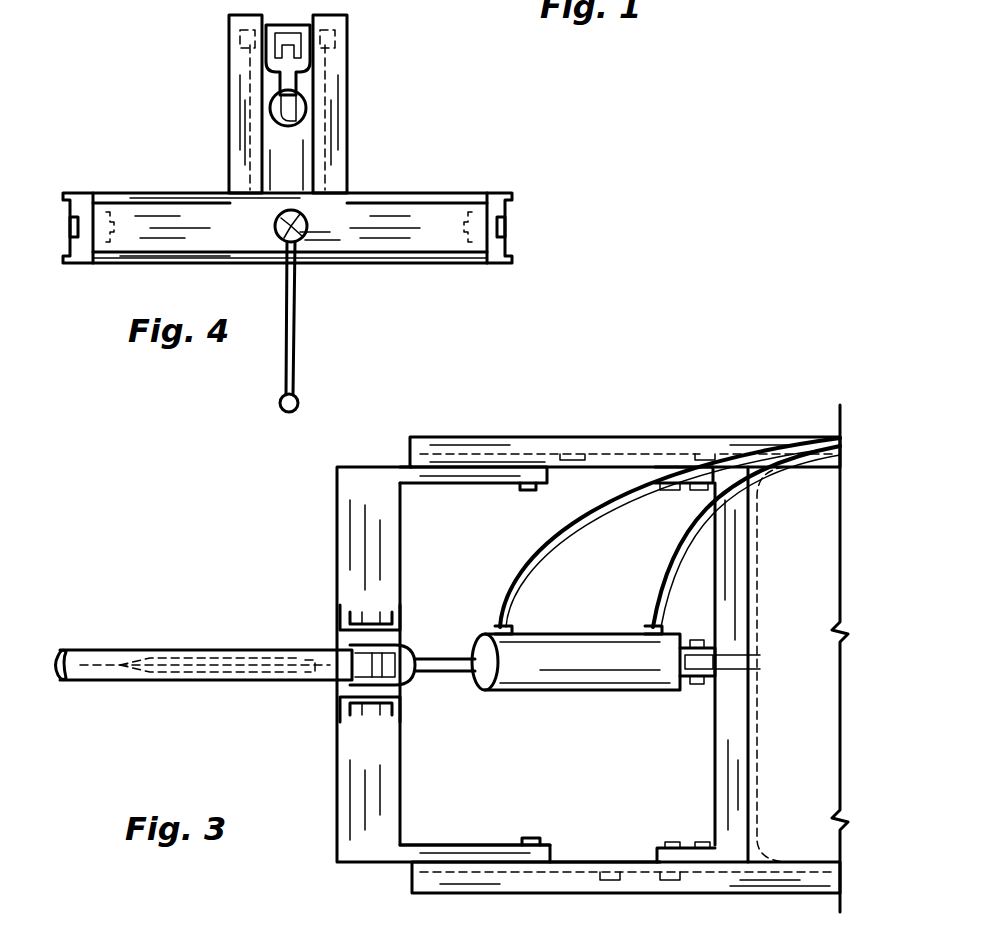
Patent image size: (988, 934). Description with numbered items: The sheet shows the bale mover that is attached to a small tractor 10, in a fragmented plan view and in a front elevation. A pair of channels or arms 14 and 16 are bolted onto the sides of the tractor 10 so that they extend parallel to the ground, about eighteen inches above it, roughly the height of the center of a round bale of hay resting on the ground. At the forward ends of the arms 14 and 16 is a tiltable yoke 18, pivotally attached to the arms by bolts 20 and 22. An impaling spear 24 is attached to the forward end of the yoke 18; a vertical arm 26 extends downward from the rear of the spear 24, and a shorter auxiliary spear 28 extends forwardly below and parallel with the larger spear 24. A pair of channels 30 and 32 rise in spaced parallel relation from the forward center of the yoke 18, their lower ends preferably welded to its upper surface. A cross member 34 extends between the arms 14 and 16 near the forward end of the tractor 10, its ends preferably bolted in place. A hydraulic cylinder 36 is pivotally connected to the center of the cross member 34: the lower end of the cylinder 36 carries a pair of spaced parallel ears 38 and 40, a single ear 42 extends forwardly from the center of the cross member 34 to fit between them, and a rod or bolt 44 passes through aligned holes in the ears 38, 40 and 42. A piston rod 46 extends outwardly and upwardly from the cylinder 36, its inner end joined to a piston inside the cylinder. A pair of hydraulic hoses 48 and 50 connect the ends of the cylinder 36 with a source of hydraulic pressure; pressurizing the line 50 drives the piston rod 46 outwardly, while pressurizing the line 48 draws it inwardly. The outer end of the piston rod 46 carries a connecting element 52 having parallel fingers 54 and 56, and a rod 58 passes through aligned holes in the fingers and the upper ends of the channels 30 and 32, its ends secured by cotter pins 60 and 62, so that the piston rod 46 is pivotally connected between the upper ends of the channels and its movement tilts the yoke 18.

In FIG. 3, the small tractor 10 is at (815, 527).
In FIG. 4, the channel or arm 14 is at (80, 192).
In FIG. 3, the channel or arm 14 is at (668, 436).
In FIG. 4, the channel or arm 16 is at (497, 192).
In FIG. 3, the channel or arm 16 is at (602, 862).
In FIG. 4, the tiltable yoke 18 is at (455, 248).
In FIG. 3, the tiltable yoke 18 is at (337, 518).
In FIG. 4, the bolt 20 is at (70, 225).
In FIG. 3, the bolt 20 is at (528, 491).
In FIG. 4, the bolt 22 is at (506, 225).
In FIG. 3, the bolt 22 is at (531, 838).
In FIG. 4, the impaling spear 24 is at (283, 240).
In FIG. 4, the vertical arm 26 is at (296, 327).
In FIG. 4, the auxiliary spear 28 is at (296, 396).
In FIG. 4, the channel 30 is at (229, 73).
In FIG. 4, the channel 32 is at (340, 122).
In FIG. 3, the cross member 34 is at (715, 787).
In FIG. 3, the hydraulic cylinder 36 is at (572, 645).
In FIG. 3, the ear 38 is at (692, 640).
In FIG. 3, the ear 40 is at (676, 690).
In FIG. 3, the single ear 42 is at (718, 666).
In FIG. 3, the rod or bolt 44 is at (708, 686).
In FIG. 4, the piston rod 46 is at (302, 86).
In FIG. 3, the piston rod 46 is at (440, 656).
In FIG. 3, the hydraulic hose 48 is at (545, 553).
In FIG. 3, the hydraulic hose 50 is at (665, 562).
In FIG. 3, the connecting element 52 is at (410, 683).
In FIG. 3, the finger 54 is at (337, 650).
In FIG. 3, the finger 56 is at (337, 680).
In FIG. 3, the rod 58 is at (360, 720).
In FIG. 3, the cotter pin 60 is at (360, 612).
In FIG. 3, the cotter pin 62 is at (378, 705).